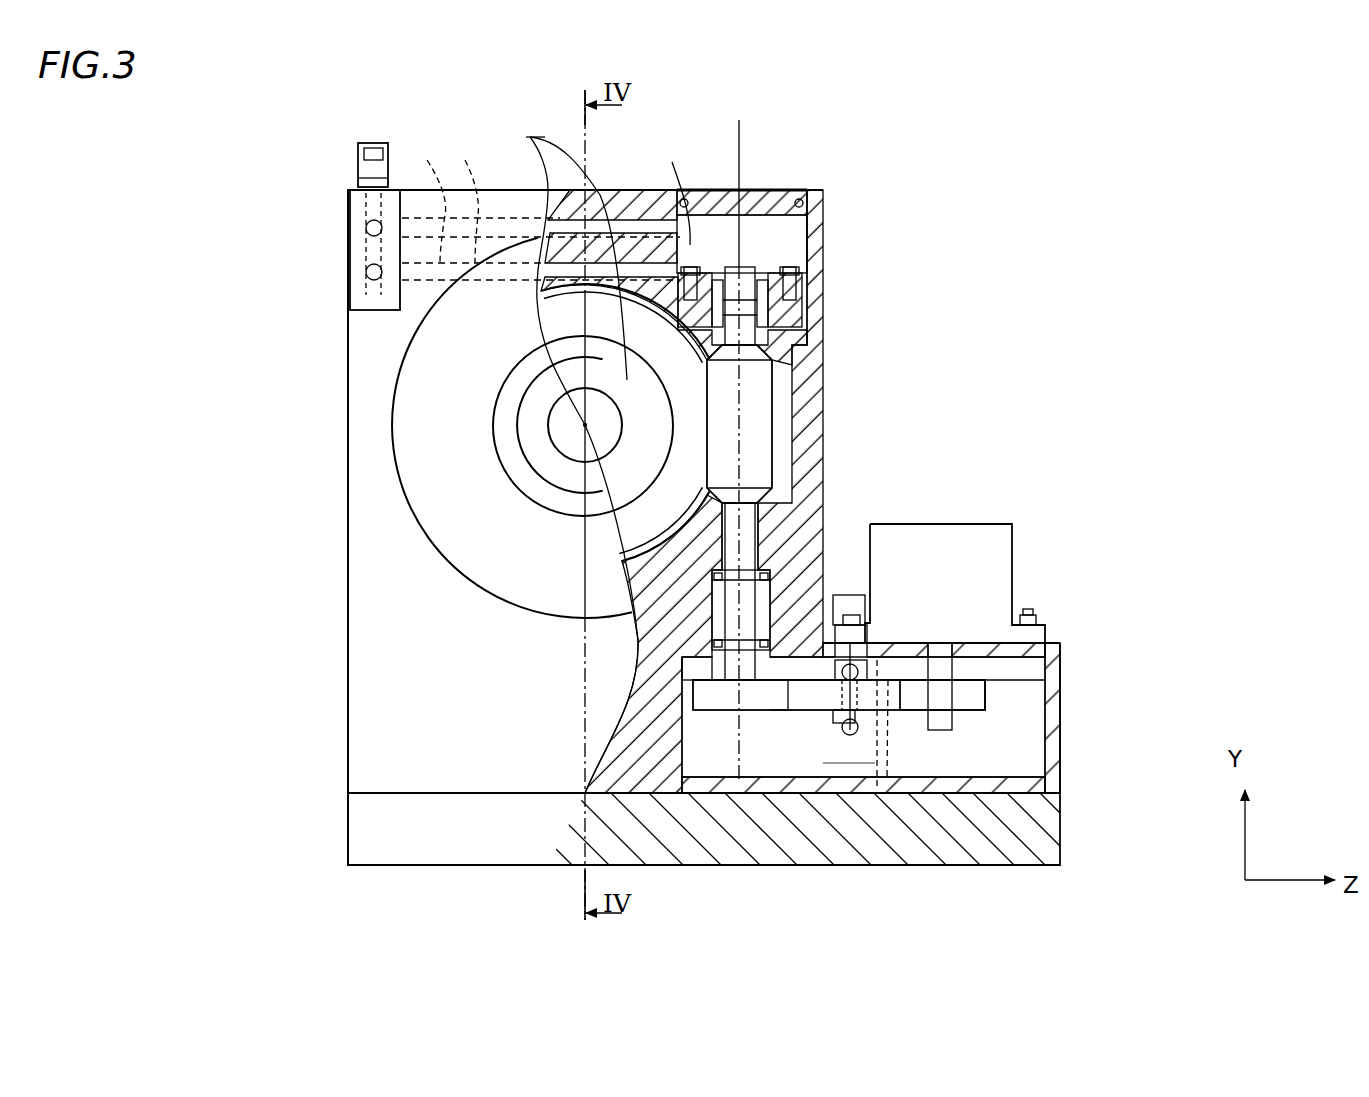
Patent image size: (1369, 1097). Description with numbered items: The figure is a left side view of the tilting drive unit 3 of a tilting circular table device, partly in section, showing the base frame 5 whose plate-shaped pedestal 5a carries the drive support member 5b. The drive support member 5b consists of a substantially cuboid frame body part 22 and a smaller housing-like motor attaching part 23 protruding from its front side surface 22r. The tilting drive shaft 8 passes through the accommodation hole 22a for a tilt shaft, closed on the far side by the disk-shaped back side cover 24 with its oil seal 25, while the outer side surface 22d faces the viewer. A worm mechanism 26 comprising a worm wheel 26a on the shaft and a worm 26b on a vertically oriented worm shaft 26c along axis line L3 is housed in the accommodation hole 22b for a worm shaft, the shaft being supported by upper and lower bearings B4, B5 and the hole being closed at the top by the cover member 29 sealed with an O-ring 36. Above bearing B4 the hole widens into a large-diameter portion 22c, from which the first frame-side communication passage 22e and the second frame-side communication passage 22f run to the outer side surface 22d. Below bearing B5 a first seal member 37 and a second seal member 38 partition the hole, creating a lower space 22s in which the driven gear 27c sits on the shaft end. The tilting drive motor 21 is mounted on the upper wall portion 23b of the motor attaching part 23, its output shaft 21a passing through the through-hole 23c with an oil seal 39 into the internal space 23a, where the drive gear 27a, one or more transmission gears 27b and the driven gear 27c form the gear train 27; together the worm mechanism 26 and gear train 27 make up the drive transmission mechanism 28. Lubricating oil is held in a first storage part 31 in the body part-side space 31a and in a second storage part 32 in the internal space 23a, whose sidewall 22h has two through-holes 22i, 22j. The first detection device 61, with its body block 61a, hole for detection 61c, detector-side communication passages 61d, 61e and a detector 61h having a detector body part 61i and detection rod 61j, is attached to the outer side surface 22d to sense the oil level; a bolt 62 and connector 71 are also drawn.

The tilting drive unit 3 is at (1157, 112).
The base frame 5 is at (345, 655).
The pedestal 5a is at (1062, 830).
The drive support member 5b is at (803, 190).
The tilting drive shaft 8 is at (525, 136).
The tilting drive motor 21 is at (1012, 560).
The output shaft 21a is at (987, 752).
The frame body part 22 is at (807, 197).
The accommodation hole for a tilt shaft 22a is at (628, 192).
The accommodation hole for a worm shaft 22b is at (790, 366).
The large-diameter portion 22c is at (631, 247).
The outer side surface 22d is at (438, 488).
The first frame-side communication passage 22e is at (429, 196).
The second frame-side communication passage 22f is at (476, 196).
The sidewall 22h is at (415, 735).
The through-hole 22i is at (884, 800).
The through-hole 22j is at (862, 730).
The front side surface 22r is at (805, 498).
The lower space 22s is at (718, 770).
The motor attaching part 23 is at (1052, 705).
The internal space 23a is at (1017, 800).
The upper wall portion 23b is at (1033, 650).
The through-hole 23c is at (913, 645).
The back side cover 24 is at (430, 520).
The oil seal 25 is at (507, 402).
The worm mechanism 26 is at (849, 473).
The worm wheel 26a is at (785, 372).
The worm 26b is at (770, 438).
The worm shaft 26c is at (762, 520).
The gear train 27 is at (912, 715).
The drive gear 27a is at (975, 695).
The transmission gear 27b is at (803, 712).
The driven gear 27c is at (713, 745).
The drive transmission mechanism 28 is at (943, 735).
The cover member 29 is at (768, 190).
The storage part 31 is at (805, 256).
The body part-side space 31a is at (805, 228).
The second storage part 32 is at (752, 745).
The O-ring 36 is at (790, 230).
The first seal member 37 is at (773, 577).
The second seal member 38 is at (773, 645).
The oil seal 39 is at (938, 643).
The first detection device 61 is at (155, 185).
The body block 61a is at (348, 215).
The hole for detection 61c is at (345, 250).
The first detector-side communication passage 61d is at (340, 232).
The second detector-side communication passage 61e is at (345, 280).
The detector 61h is at (240, 176).
The detector body part 61i is at (357, 187).
The detection rod 61j is at (345, 207).
The bolt 62 is at (845, 735).
The connector 71 is at (356, 144).
The bearing B4 is at (770, 330).
The bearing B5 is at (775, 537).
The axis line L3 is at (738, 143).